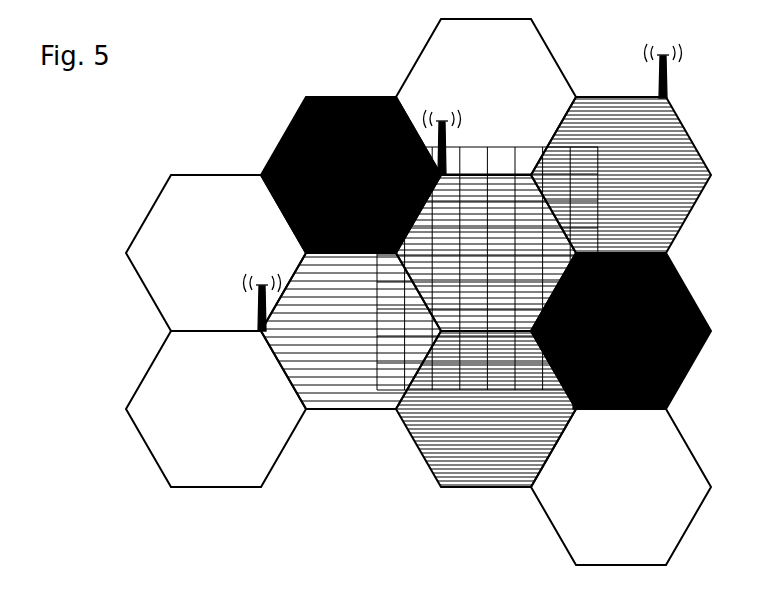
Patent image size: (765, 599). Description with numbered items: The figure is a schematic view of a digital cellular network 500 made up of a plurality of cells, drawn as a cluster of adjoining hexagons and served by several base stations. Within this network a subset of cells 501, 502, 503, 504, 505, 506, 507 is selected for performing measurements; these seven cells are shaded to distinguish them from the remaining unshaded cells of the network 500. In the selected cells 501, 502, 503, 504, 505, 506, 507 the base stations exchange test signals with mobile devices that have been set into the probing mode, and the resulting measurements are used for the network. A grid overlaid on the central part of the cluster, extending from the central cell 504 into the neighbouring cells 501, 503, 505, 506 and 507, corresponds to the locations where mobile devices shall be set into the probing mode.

The digital cellular network 500 is at (240, 130).
The cell 501 is at (351, 175).
The cell 502 is at (486, 97).
The cell 503 is at (621, 148).
The cell 504 is at (487, 268).
The cell 505 is at (343, 331).
The cell 506 is at (486, 409).
The cell 507 is at (621, 331).